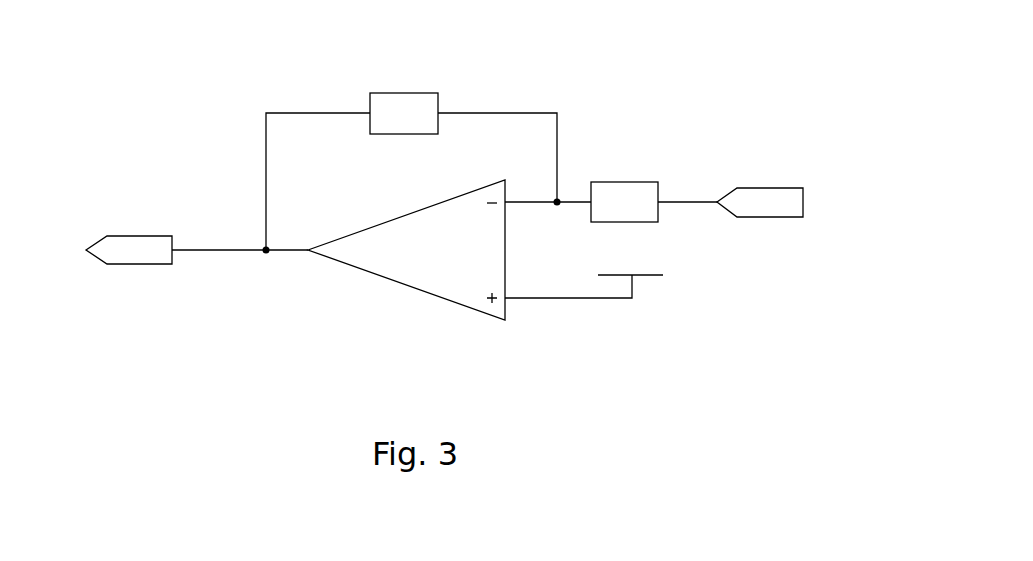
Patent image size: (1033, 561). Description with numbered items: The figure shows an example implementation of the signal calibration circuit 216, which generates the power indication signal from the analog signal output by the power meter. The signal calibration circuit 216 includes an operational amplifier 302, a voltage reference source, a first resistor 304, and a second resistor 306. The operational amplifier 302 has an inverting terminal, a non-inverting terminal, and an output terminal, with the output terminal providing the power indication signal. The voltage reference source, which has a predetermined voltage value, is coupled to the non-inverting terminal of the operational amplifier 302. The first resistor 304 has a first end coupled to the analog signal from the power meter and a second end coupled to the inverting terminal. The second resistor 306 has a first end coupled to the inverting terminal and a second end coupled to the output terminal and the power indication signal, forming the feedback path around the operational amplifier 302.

The signal calibration circuit 216 is at (758, 67).
The operational amplifier 302 is at (398, 282).
The first resistor 304 is at (640, 182).
The second resistor 306 is at (422, 92).